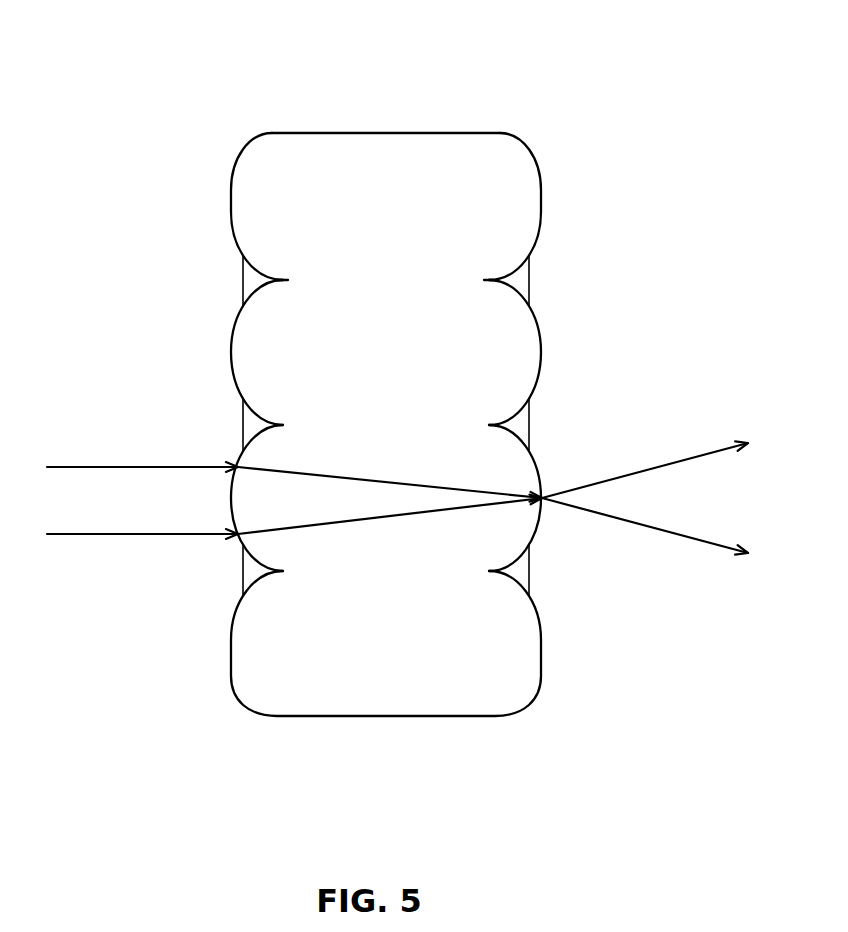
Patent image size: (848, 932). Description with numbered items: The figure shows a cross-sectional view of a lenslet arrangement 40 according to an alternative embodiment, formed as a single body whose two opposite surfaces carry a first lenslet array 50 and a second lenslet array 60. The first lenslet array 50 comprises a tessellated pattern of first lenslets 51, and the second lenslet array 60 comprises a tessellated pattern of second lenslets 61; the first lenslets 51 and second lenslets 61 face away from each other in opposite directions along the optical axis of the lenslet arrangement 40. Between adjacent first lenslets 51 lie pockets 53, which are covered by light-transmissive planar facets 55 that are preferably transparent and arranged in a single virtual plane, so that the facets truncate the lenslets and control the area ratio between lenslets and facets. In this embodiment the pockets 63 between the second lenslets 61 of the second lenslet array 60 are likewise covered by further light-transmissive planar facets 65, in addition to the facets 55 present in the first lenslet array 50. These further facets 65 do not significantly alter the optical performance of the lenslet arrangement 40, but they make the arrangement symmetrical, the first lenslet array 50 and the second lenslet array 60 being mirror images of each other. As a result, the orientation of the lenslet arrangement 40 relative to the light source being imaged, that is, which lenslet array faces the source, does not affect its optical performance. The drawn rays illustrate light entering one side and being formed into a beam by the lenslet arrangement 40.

The lenslet arrangement 40 is at (395, 143).
The first lenslet array 50 is at (231, 197).
The first lenslets 51 is at (262, 362).
The pockets 53 is at (284, 278).
The light-transmissive planar facets 55 is at (243, 278).
The second lenslet array 60 is at (542, 197).
The second lenslets 61 is at (530, 355).
The pockets 63 is at (490, 278).
The light-transmissive planar facets 65 is at (529, 283).